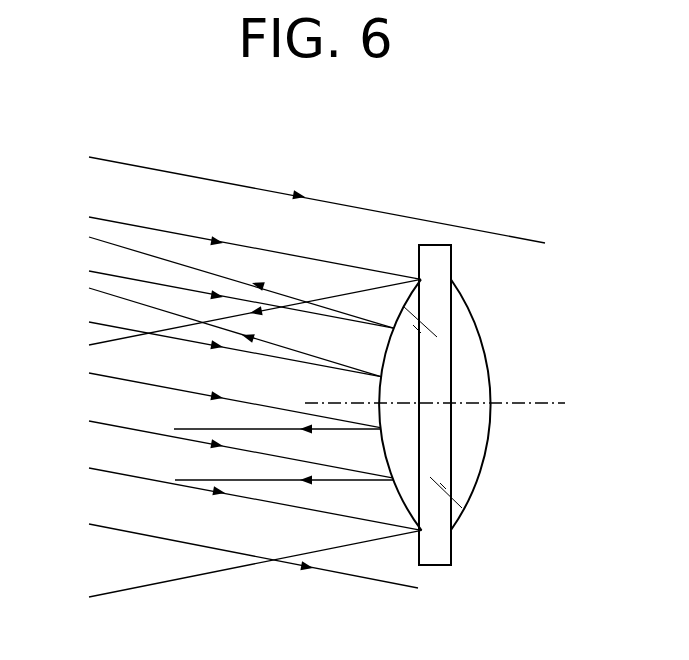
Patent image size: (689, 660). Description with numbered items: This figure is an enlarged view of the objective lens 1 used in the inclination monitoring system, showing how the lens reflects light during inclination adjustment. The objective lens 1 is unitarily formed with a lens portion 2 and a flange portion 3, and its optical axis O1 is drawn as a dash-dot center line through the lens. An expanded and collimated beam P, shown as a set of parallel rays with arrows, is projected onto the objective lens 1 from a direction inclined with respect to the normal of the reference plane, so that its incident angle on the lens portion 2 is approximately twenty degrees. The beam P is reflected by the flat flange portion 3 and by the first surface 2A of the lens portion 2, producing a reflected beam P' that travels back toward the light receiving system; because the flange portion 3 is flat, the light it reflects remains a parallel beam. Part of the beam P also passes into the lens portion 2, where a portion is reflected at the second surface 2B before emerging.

The objective lens 1 is at (456, 424).
The lens portion 2 is at (456, 426).
The first surface 2A is at (403, 505).
The second surface 2B is at (488, 438).
The flange portion 3 is at (440, 553).
The optical axis O1 is at (520, 403).
The beam P is at (317, 372).
The reflected beam P' is at (255, 434).